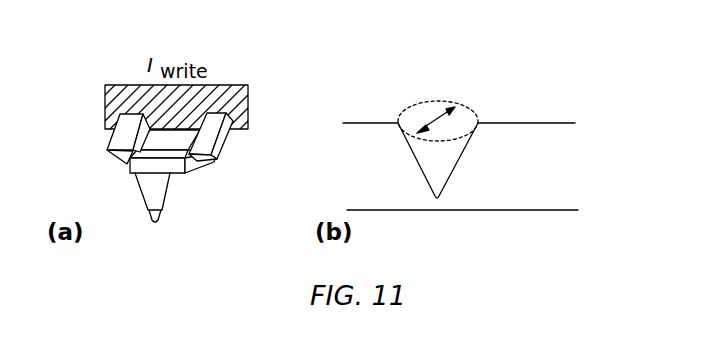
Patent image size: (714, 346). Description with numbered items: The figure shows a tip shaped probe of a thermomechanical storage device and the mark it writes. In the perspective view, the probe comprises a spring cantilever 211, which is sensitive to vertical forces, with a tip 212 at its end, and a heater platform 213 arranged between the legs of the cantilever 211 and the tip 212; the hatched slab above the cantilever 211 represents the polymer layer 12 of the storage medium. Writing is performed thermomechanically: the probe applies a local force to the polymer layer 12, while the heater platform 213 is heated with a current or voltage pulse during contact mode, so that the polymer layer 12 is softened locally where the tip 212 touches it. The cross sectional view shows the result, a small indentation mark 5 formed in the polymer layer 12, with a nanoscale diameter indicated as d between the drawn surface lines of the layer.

The polymer layer 12 is at (272, 112).
The spring cantilever 211 is at (102, 140).
The heater platform 213 is at (129, 158).
The tip 212 is at (167, 200).
The indentation mark 5 is at (502, 86).